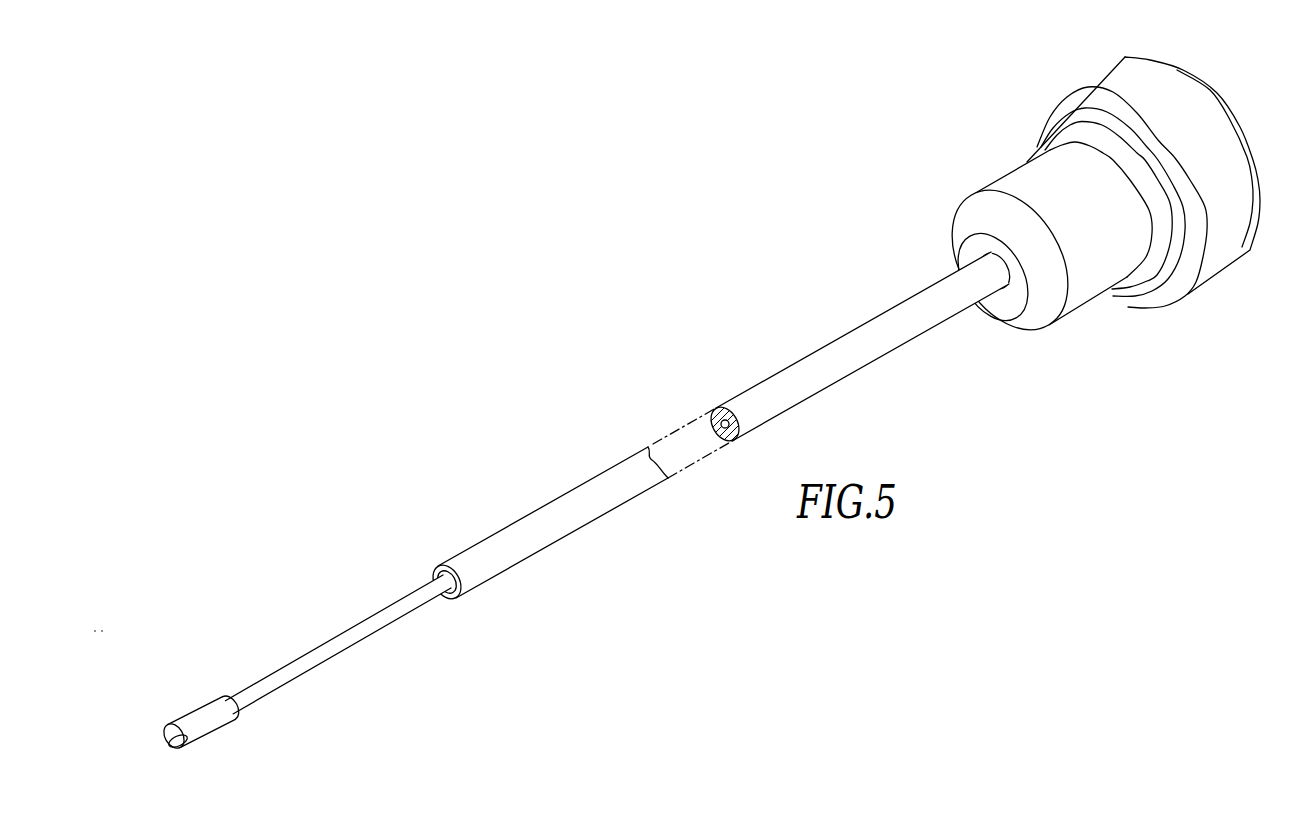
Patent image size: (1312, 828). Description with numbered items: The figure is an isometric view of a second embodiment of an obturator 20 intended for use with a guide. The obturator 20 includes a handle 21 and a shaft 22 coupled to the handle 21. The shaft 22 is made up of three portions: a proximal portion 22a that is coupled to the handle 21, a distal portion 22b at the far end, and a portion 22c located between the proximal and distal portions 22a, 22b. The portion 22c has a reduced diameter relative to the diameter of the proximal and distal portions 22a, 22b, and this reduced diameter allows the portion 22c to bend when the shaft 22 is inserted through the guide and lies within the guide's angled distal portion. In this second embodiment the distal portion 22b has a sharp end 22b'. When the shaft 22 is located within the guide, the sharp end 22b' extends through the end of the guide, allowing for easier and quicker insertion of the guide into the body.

The obturator 20 is at (747, 322).
The handle 21 is at (1085, 285).
The shaft 22 is at (538, 537).
The proximal portion 22a is at (992, 283).
The distal portion 22b is at (220, 728).
The sharp end 22b' is at (151, 751).
The portion having a reduced diameter 22c is at (350, 630).